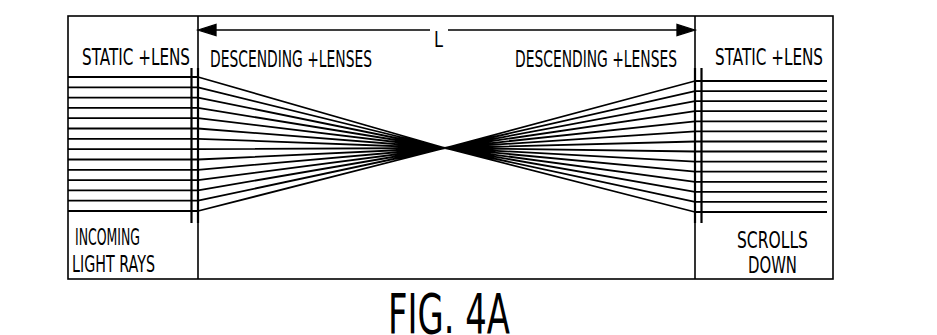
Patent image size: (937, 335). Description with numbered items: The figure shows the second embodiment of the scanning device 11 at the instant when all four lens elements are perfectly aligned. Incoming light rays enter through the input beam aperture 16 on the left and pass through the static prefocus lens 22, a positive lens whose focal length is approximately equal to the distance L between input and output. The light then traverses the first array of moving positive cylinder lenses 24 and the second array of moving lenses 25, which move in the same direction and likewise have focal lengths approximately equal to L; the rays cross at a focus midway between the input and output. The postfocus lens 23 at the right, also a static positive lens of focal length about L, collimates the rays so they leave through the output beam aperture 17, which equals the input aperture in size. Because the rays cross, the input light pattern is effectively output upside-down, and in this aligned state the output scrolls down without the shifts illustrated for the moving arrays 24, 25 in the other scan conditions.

The optical device housing 11 is at (74, 72).
The input beam aperture 16 is at (60, 73).
The output beam aperture 17 is at (840, 77).
The static prefocus lens 22 is at (190, 224).
The postfocus lens 23 is at (704, 223).
The array of moving lenses 24 is at (199, 224).
The array of moving lenses 25 is at (694, 223).